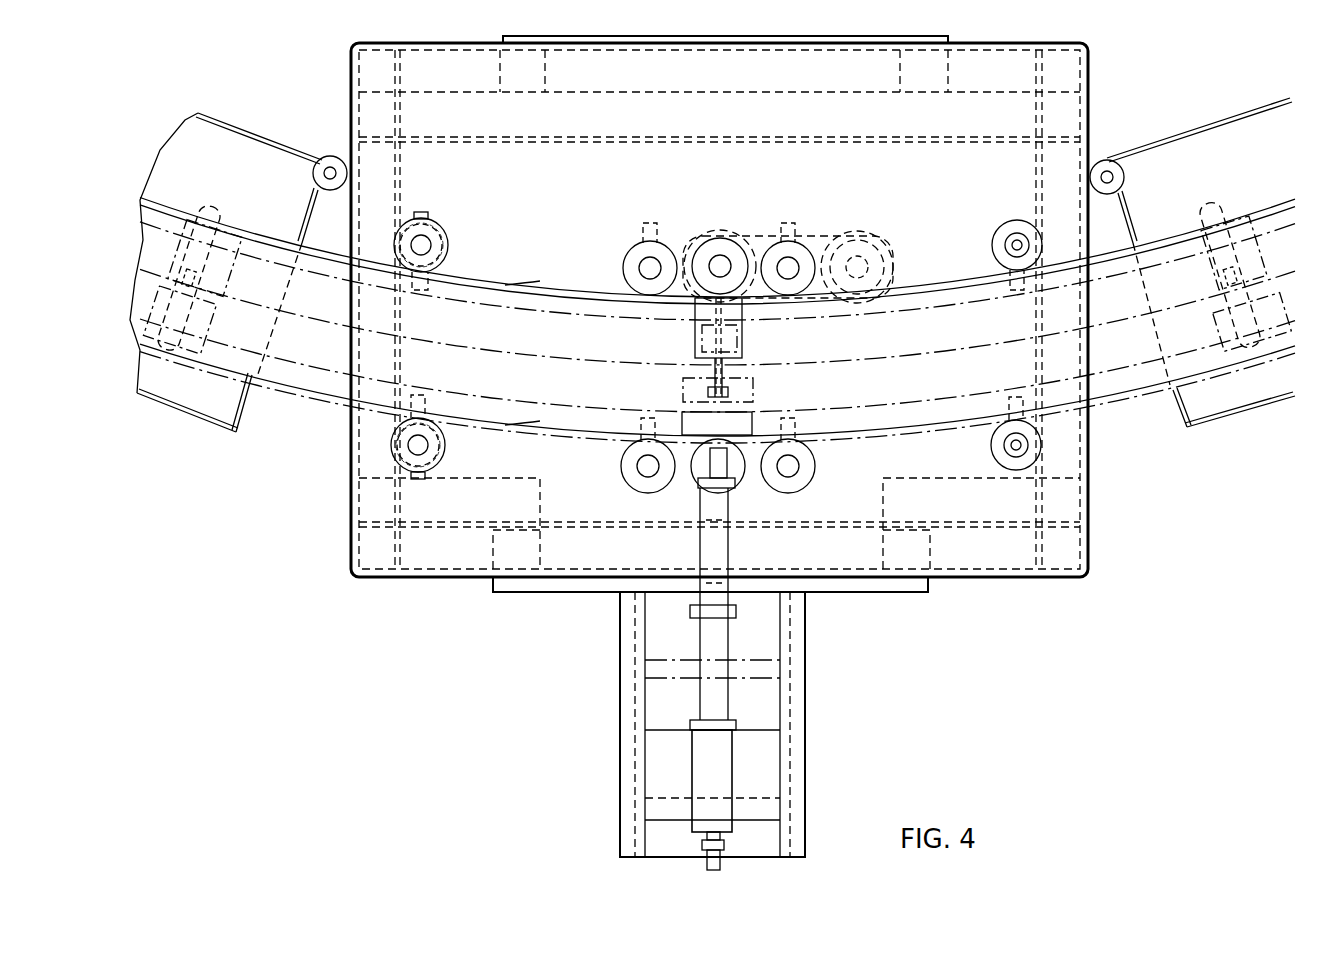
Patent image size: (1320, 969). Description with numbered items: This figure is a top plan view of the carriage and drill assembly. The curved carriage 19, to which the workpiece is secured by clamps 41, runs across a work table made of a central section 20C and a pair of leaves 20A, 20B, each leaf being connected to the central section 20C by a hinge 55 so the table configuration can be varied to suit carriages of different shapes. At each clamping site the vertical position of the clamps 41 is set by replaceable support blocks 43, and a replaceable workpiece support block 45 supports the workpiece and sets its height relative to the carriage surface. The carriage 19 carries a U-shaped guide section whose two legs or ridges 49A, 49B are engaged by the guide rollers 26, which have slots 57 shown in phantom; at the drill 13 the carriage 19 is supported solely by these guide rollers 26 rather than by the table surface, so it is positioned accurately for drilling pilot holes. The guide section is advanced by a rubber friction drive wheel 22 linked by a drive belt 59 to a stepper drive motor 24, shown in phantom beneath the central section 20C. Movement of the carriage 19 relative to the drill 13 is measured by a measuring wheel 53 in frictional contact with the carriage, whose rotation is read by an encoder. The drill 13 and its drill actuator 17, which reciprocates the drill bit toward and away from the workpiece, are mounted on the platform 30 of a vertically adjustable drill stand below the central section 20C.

The drill 13 is at (730, 545).
The drill actuator 17 is at (733, 785).
The carriage 19 is at (573, 300).
The leaf of the work table 20A is at (183, 415).
The leaf of the work table 20B is at (1200, 430).
The central section 20C is at (1030, 578).
The drive wheel 22 is at (712, 240).
The drive motor 24 is at (880, 250).
The guide rollers 26 is at (440, 225).
The platform 30 is at (806, 698).
The clamps 41 is at (690, 372).
The support blocks 43 is at (745, 335).
The workpiece support block 45 is at (755, 385).
The leg of the guide section 49A is at (510, 277).
The leg of the guide section 49B is at (537, 433).
The measuring wheel 53 is at (700, 478).
The hinge 55 is at (330, 158).
The slots 57 is at (448, 245).
The drive belt 59 is at (838, 235).